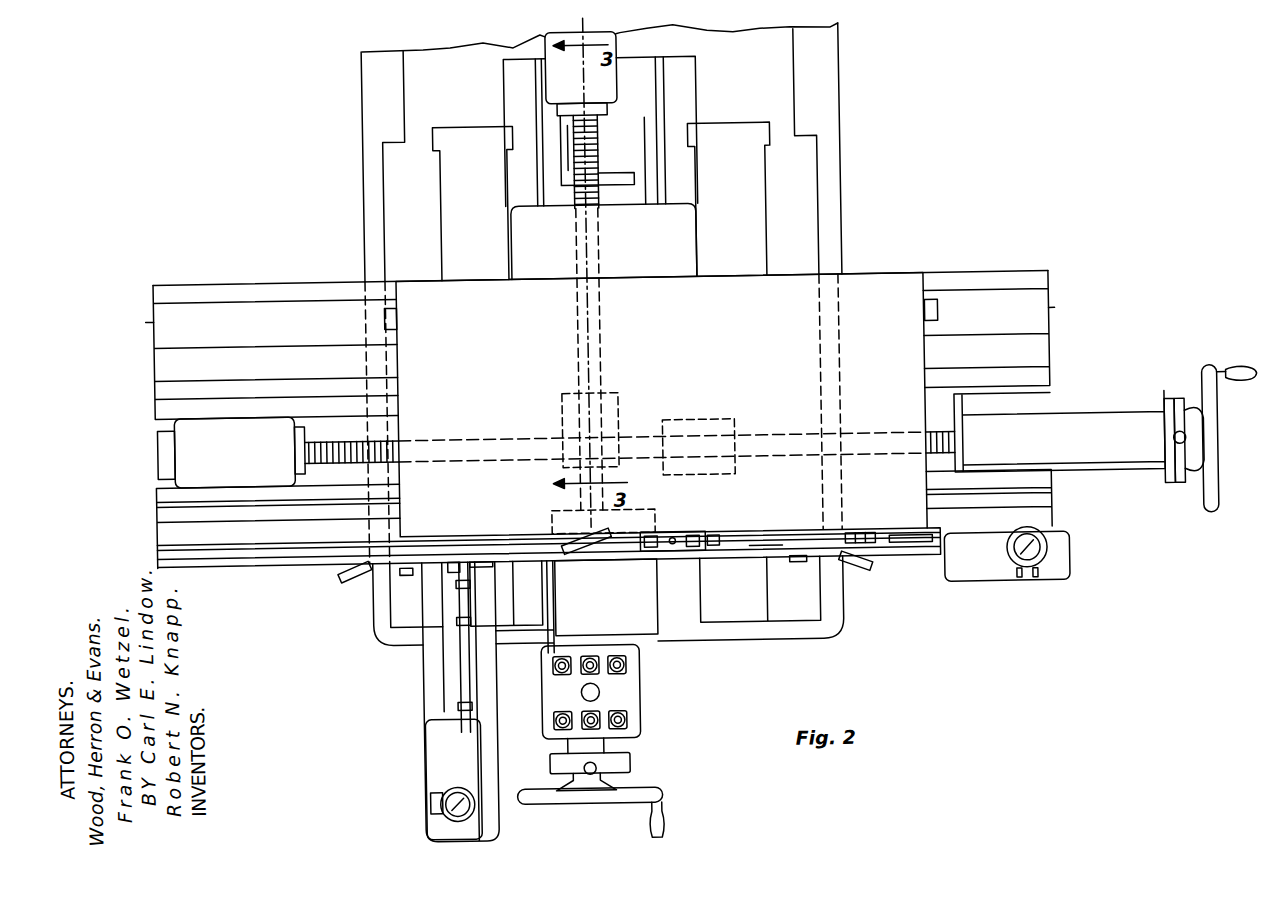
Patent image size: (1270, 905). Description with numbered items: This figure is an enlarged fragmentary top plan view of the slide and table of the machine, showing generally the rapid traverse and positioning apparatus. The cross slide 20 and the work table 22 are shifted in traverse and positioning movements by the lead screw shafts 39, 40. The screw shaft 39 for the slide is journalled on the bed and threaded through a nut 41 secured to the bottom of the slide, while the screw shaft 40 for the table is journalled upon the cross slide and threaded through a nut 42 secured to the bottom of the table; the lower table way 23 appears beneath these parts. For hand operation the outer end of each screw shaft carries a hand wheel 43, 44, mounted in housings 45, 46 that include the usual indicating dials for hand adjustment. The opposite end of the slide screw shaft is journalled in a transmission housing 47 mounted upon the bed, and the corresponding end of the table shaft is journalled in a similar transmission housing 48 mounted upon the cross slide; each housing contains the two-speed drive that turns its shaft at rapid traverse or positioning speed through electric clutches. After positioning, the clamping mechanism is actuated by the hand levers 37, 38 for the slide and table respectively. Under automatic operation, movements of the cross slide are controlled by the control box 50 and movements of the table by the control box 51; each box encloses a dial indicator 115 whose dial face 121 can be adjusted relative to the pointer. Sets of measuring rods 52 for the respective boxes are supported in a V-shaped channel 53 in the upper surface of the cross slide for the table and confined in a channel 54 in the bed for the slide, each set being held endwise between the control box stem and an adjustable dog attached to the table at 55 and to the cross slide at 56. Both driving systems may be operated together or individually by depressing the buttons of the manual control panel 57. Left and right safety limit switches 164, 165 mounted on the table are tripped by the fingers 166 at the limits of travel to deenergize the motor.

The cross slide 20 is at (225, 274).
The work table 22 is at (880, 300).
The lower table way 23 is at (170, 510).
The hand lever 37 is at (352, 576).
The hand lever 38 is at (580, 550).
The lead screw shaft 39 is at (603, 140).
The lead screw shaft 40 is at (337, 437).
The nut 41 is at (612, 393).
The nut 42 is at (720, 422).
The hand wheel 43 is at (583, 805).
The hand wheel 44 is at (1212, 449).
The housing 45 is at (617, 749).
The housing 46 is at (1103, 421).
The transmission housing 47 is at (613, 90).
The transmission housing 48 is at (184, 456).
The control box 50 is at (436, 760).
The control box 51 is at (980, 563).
The measuring rods 52 is at (464, 601).
The V-shaped channel 53 is at (883, 540).
The channel 54 is at (459, 658).
The adjustable dog 55 is at (688, 533).
The adjustable dog 56 is at (450, 571).
The manual control panel 57 is at (625, 693).
The dial indicator 115 is at (1034, 566).
The dial face 121 is at (461, 810).
The left safety limit switch 164 is at (401, 315).
The right safety limit switch 165 is at (937, 317).
The fingers 166 is at (147, 315).